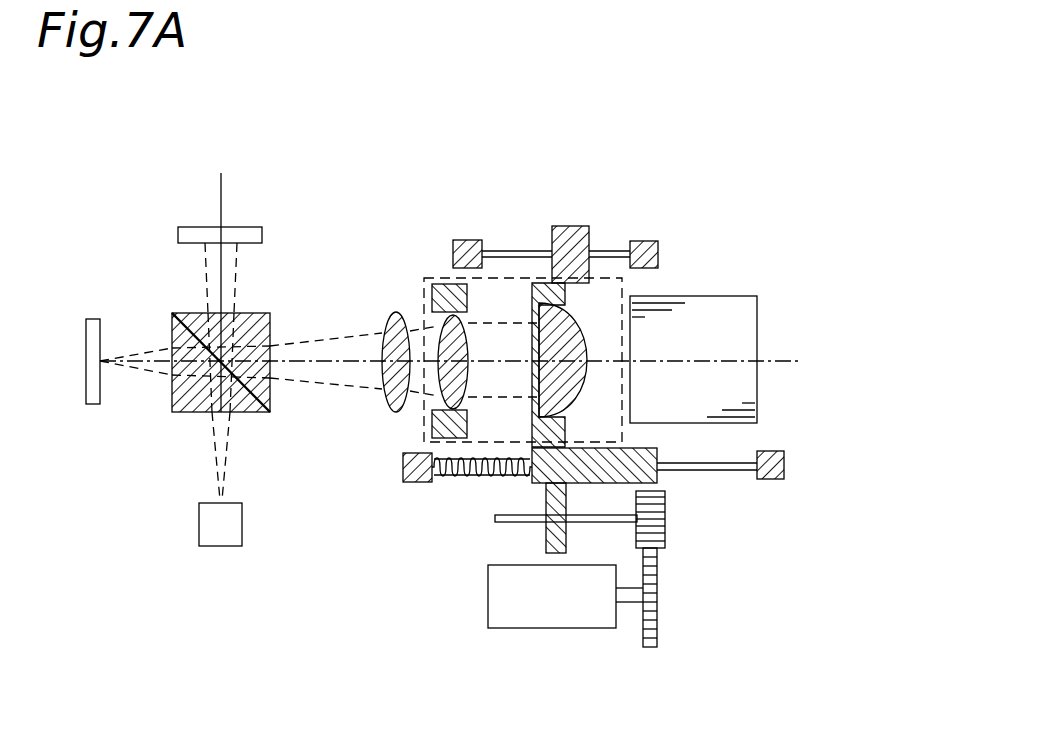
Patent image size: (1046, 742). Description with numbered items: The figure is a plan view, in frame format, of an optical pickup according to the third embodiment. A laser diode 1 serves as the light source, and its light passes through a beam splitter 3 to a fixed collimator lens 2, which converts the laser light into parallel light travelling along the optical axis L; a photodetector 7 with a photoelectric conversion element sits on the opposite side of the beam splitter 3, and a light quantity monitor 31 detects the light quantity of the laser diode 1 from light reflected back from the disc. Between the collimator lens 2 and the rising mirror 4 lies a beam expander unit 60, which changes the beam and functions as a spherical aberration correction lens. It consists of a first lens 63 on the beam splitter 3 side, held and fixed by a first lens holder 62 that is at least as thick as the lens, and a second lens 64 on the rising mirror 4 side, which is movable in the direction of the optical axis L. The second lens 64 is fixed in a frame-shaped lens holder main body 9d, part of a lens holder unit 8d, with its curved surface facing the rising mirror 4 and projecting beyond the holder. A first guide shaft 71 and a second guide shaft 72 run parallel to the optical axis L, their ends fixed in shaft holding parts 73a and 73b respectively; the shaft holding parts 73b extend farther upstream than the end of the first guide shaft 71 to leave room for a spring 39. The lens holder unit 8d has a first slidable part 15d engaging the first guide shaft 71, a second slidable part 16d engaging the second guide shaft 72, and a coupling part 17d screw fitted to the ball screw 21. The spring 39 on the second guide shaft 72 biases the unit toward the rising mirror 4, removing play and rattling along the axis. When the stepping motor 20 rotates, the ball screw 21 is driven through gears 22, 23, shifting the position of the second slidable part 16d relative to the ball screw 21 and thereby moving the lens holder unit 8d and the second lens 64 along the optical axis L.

The laser diode 1 is at (220, 546).
The collimator lens 2 is at (393, 332).
The beam splitter 3 is at (178, 412).
The rising mirror 4 is at (758, 386).
The photodetector 7 is at (93, 404).
The lens holder unit 8d is at (573, 216).
The lens holder main body 9d is at (545, 288).
The first slidable part 15d is at (590, 228).
The second slidable part 16d is at (657, 451).
The coupling part 17d is at (547, 536).
The stepping motor 20 is at (555, 630).
The ball screw 21 is at (576, 523).
The gear 22 is at (658, 594).
The gear 23 is at (666, 517).
The light quantity monitor 31 is at (178, 233).
The spring 39 is at (458, 478).
The beam expander unit 60 is at (424, 424).
The first lens holder 62 is at (445, 286).
The first lens 63 is at (462, 350).
The second lens 64 is at (586, 348).
The first guide shaft 71 is at (612, 252).
The second guide shaft 72 is at (727, 468).
The shaft holding part 73a is at (465, 240).
The shaft holding part 73b is at (402, 480).
The optical axis L is at (312, 360).